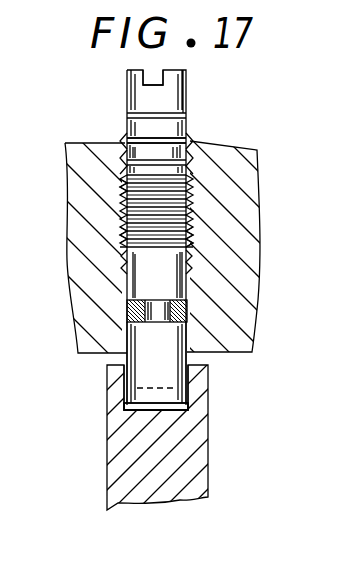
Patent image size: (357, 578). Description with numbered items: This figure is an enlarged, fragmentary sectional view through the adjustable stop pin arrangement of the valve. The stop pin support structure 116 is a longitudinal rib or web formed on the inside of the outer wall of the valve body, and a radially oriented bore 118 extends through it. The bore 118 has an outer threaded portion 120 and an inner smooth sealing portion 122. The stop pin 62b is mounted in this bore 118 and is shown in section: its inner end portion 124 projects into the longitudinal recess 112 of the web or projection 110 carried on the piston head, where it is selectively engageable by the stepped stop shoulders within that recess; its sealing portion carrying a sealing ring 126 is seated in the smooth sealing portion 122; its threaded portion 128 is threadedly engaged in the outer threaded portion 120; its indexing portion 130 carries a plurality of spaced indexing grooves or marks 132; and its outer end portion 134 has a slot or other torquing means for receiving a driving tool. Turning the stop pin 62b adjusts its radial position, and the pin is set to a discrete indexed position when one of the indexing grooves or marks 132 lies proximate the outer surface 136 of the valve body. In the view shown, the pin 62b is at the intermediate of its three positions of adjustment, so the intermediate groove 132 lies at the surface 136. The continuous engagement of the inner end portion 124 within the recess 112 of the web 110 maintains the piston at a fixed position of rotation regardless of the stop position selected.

The web or projection 110 is at (196, 460).
The longitudinal recess 112 is at (176, 405).
The stop pin support structure 116 is at (107, 208).
The bore 118 is at (128, 236).
The outer threaded portion 120 is at (190, 248).
The inner smooth sealing portion 122 is at (186, 350).
The inner end portion 124 is at (124, 405).
The sealing portion with sealing ring 126 is at (247, 170).
The threaded portion 128 is at (128, 190).
The indexing portion 130 is at (164, 243).
The indexing grooves or marks 132 is at (121, 134).
The outer end portion 134 is at (187, 72).
The outer surface of valve body 136 is at (196, 140).
The stop pin 62b is at (197, 208).